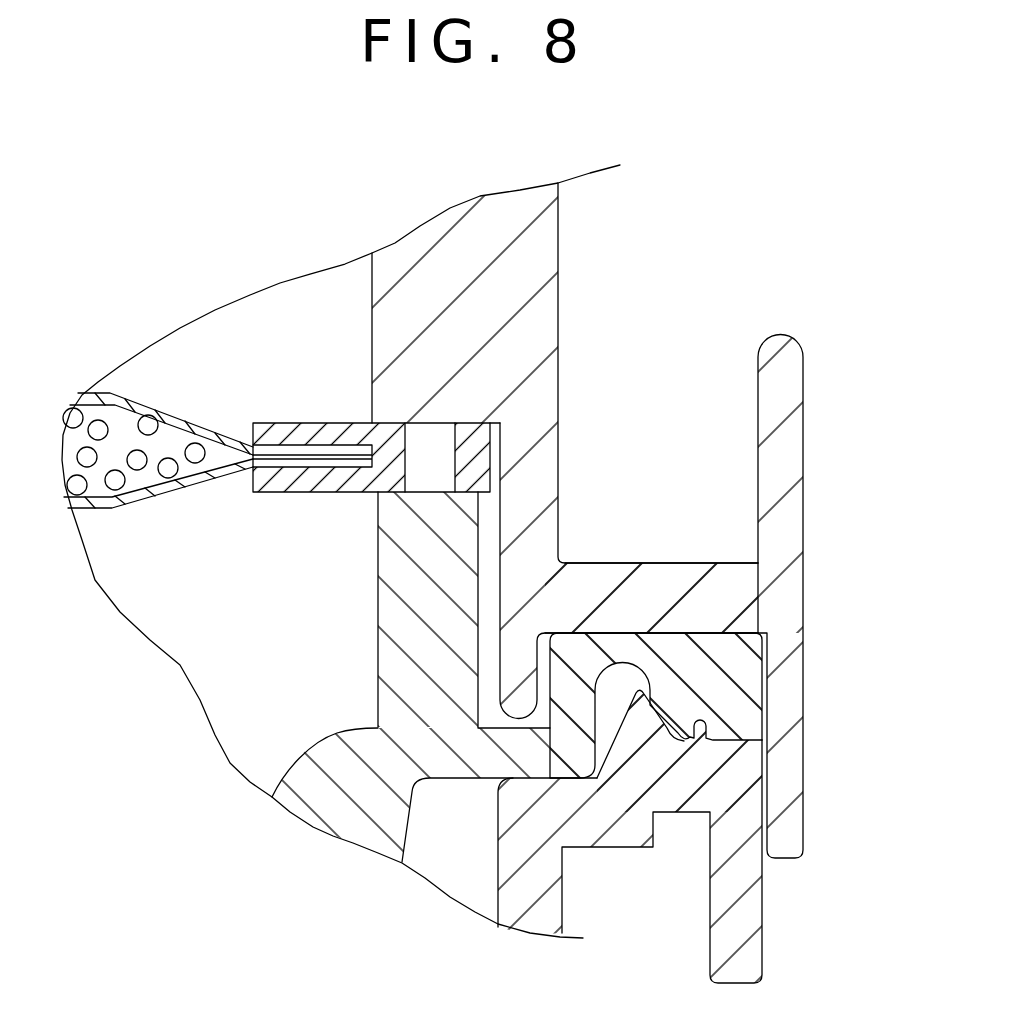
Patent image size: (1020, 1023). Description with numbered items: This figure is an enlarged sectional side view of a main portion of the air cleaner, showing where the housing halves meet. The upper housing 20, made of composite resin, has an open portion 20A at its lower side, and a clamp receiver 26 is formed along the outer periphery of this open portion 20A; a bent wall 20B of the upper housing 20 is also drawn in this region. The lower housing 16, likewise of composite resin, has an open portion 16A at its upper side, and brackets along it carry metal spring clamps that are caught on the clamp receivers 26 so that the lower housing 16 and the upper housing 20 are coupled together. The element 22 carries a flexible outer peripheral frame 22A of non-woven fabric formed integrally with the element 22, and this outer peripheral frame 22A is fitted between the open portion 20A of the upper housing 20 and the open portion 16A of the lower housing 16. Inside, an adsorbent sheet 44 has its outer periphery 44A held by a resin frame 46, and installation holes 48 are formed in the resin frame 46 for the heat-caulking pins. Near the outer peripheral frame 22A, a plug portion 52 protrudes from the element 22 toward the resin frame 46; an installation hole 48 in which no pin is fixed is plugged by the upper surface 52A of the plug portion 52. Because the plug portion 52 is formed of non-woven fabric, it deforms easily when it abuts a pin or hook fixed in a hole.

The lower housing 16 is at (763, 912).
The open portion of the lower housing 16A is at (703, 770).
The upper housing 20 is at (561, 257).
The open portion of the upper housing 20A is at (733, 602).
The housing bent wall portion 20B is at (497, 652).
The element 22 is at (312, 745).
The outer peripheral frame 22A is at (747, 688).
The clamp receiver 26 is at (790, 448).
The adsorbent sheet 44 is at (150, 393).
The outer periphery of the adsorbent sheet 44A is at (262, 470).
The resin frame 46 is at (320, 422).
The installation hole 48 is at (406, 458).
The plug portion 52 is at (378, 588).
The upper surface of the plug portion 52A is at (441, 487).